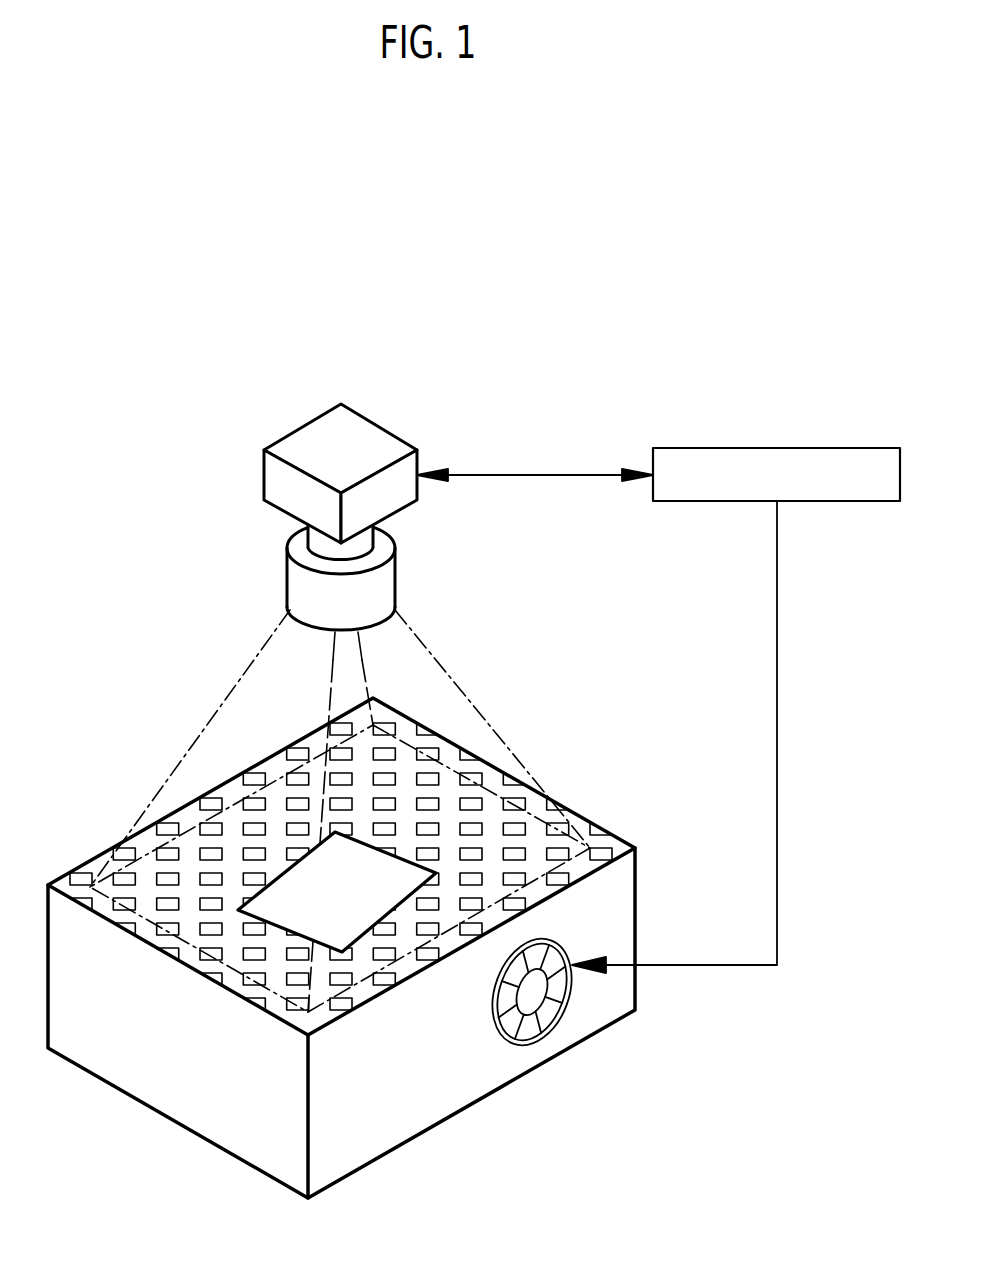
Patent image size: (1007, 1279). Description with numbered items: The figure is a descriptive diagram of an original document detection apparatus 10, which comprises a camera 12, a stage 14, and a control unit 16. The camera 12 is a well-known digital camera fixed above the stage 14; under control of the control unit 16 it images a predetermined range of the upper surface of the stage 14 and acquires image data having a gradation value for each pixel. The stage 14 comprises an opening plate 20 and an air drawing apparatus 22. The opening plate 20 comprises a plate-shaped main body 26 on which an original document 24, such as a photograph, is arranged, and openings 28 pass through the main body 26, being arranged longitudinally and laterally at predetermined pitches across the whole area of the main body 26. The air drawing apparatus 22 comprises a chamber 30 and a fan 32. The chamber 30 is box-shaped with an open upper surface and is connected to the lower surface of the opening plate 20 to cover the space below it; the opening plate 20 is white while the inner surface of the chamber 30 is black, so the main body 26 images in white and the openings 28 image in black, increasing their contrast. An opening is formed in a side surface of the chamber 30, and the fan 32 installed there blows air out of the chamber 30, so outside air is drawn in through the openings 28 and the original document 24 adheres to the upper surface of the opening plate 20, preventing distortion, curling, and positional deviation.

The original document detection apparatus 10 is at (556, 371).
The camera 12 is at (377, 421).
The stage 14 is at (541, 661).
The control unit 16 is at (842, 502).
The opening plate 20 is at (534, 768).
The air drawing apparatus 22 is at (562, 1057).
The original document 24 is at (375, 905).
The main body 26 is at (493, 777).
The openings 28 is at (253, 780).
The chamber 30 is at (503, 1067).
The fan 32 is at (538, 993).